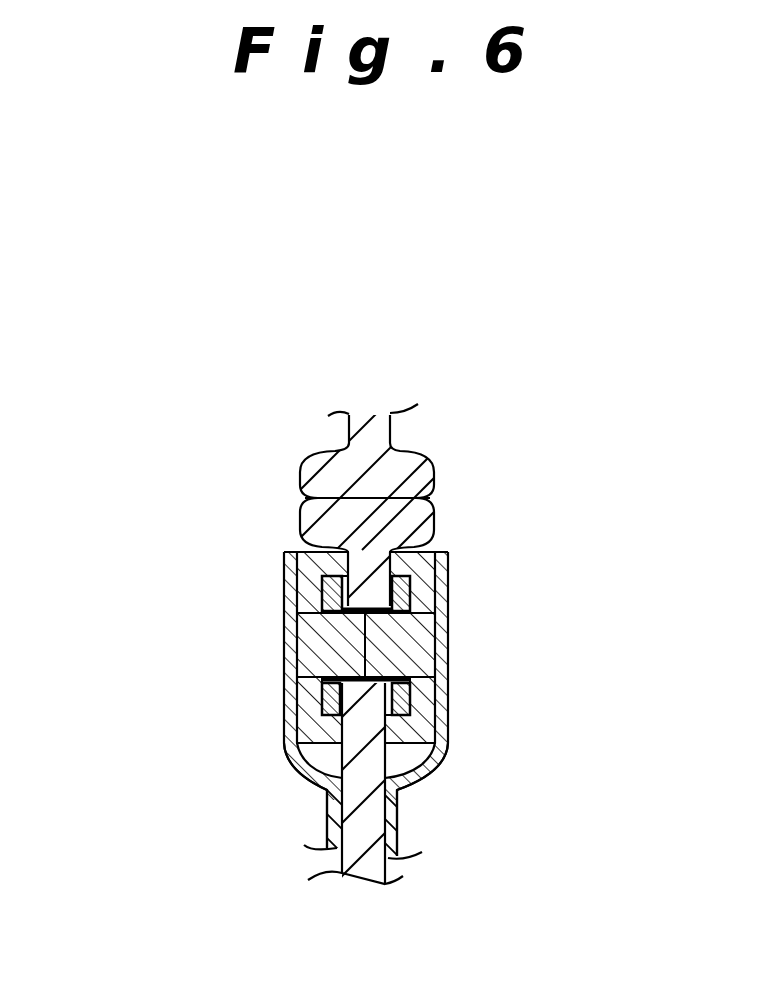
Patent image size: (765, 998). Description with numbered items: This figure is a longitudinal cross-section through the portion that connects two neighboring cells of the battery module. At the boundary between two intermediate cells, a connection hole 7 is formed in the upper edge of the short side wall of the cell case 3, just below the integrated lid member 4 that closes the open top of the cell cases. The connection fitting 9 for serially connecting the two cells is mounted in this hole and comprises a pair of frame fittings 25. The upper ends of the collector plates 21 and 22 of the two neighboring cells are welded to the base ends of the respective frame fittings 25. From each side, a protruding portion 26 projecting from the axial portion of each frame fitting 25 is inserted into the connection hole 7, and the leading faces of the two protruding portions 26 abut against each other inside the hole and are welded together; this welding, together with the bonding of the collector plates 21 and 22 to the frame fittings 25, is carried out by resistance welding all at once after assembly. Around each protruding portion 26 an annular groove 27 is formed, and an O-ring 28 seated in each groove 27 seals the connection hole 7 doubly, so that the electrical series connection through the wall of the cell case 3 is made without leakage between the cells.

The cell case 3 is at (72, 673).
The integrated lid member 4 is at (383, 462).
The connection hole 7 is at (323, 668).
The connection fitting 9 is at (523, 485).
The collector plate 21 is at (395, 808).
The collector plate 22 is at (330, 815).
The frame fitting 25 is at (290, 745).
The protruding portion 26 is at (333, 632).
The annular groove 27 is at (320, 697).
The O-ring 28 is at (322, 576).